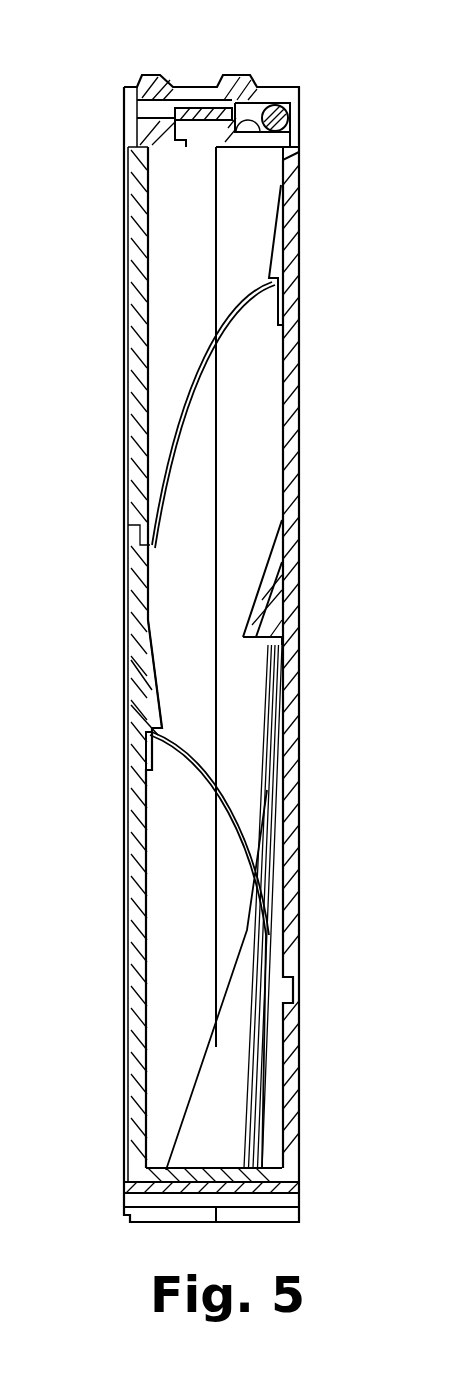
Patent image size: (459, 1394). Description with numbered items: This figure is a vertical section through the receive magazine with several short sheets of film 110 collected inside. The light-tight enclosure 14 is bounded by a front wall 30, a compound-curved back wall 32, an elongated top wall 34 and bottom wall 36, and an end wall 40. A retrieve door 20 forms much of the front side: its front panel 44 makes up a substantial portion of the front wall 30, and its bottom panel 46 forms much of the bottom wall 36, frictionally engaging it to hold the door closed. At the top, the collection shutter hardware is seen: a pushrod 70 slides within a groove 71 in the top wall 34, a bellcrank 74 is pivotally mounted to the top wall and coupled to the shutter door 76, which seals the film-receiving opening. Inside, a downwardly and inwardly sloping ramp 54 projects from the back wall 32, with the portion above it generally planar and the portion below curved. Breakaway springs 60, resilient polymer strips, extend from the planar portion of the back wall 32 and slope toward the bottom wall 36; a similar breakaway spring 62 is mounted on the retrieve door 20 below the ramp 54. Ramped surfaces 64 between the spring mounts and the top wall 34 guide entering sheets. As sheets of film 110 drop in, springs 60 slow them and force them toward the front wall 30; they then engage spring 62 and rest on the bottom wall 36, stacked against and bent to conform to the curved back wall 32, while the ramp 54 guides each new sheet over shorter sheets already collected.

The light-tight enclosure 14 is at (300, 810).
The retrieve door 20 is at (126, 1013).
The front wall 30 is at (140, 615).
The back wall 32 is at (292, 432).
The top wall 34 is at (258, 90).
The bottom wall 36 is at (250, 1222).
The end wall 40 is at (170, 912).
The front panel 44 is at (143, 1078).
The bottom panel 46 is at (167, 1188).
The ramp 54 is at (263, 607).
The breakaway springs 60 is at (228, 334).
The breakaway spring 62 is at (207, 788).
The ramped surfaces 64 is at (274, 268).
The pushrod 70 is at (288, 116).
The groove 71 is at (284, 157).
The bellcrank 74 is at (262, 90).
The door 76 is at (199, 106).
The sheets of film 110 is at (268, 1042).